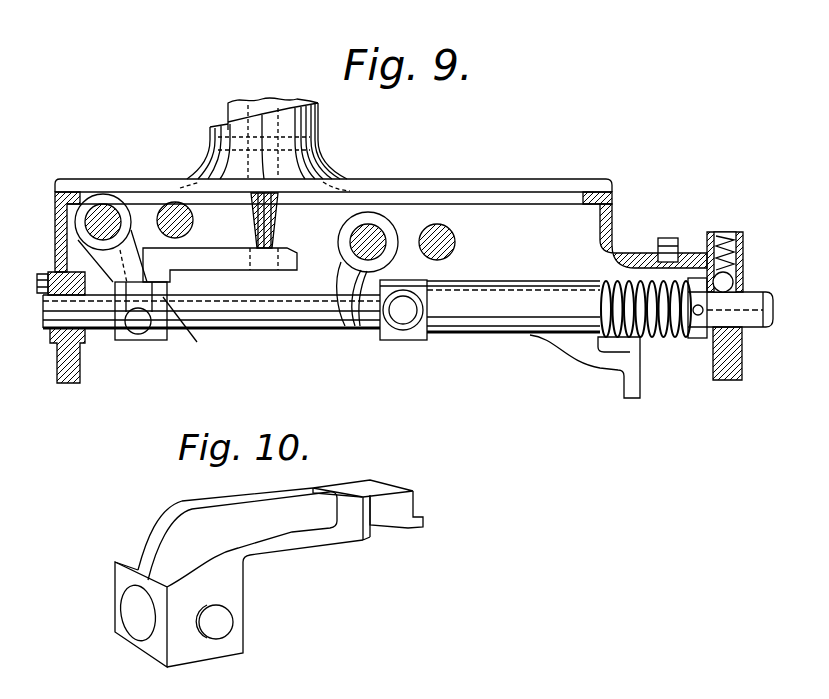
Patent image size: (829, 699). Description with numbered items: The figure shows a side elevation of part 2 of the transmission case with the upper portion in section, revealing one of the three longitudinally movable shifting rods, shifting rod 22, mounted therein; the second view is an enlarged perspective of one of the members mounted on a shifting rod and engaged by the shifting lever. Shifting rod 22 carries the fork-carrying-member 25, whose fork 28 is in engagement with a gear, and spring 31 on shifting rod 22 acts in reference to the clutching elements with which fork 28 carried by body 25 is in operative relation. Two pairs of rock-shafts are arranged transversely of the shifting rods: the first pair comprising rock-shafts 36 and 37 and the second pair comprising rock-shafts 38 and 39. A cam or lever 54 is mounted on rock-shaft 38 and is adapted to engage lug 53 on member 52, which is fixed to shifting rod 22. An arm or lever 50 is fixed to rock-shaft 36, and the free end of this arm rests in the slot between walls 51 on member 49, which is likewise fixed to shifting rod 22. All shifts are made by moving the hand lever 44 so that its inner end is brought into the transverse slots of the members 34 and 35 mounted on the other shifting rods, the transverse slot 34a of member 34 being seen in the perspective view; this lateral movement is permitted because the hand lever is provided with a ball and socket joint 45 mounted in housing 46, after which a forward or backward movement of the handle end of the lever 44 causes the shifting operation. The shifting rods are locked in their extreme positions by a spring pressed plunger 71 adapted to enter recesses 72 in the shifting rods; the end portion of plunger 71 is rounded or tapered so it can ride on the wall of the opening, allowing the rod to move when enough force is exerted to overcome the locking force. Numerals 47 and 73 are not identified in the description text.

In FIG. 9, the part of the case 2 is at (55, 223).
In FIG. 9, the shifting rod 22 is at (300, 323).
In FIG. 9, the fork-carrying-member 25 is at (513, 306).
In FIG. 9, the fork 28 is at (627, 388).
In FIG. 9, the spring 31 is at (618, 282).
In FIG. 10, the member 34 is at (292, 547).
In FIG. 10, the transverse slot 34a is at (383, 518).
In FIG. 9, the member 35 is at (193, 254).
In FIG. 9, the rock-shaft 36 is at (103, 204).
In FIG. 9, the rock-shaft 37 is at (172, 202).
In FIG. 9, the rock-shaft 38 is at (358, 234).
In FIG. 9, the rock-shaft 39 is at (441, 232).
In FIG. 9, the hand lever 44 is at (277, 212).
In FIG. 9, the ball and socket joint 45 is at (243, 105).
In FIG. 9, the housing 46 is at (296, 140).
In FIG. 10, the pin 47 is at (228, 615).
In FIG. 9, the member 49 is at (192, 326).
In FIG. 9, the arm or lever 50 is at (108, 268).
In FIG. 9, the walls 51 is at (120, 334).
In FIG. 9, the member 52 is at (384, 341).
In FIG. 9, the lug 53 is at (404, 318).
In FIG. 9, the cam or lever 54 is at (340, 263).
In FIG. 9, the spring pressed plunger 71 is at (742, 273).
In FIG. 9, the recesses 72 is at (757, 296).
In FIG. 9, the detent bracket 73 is at (743, 253).